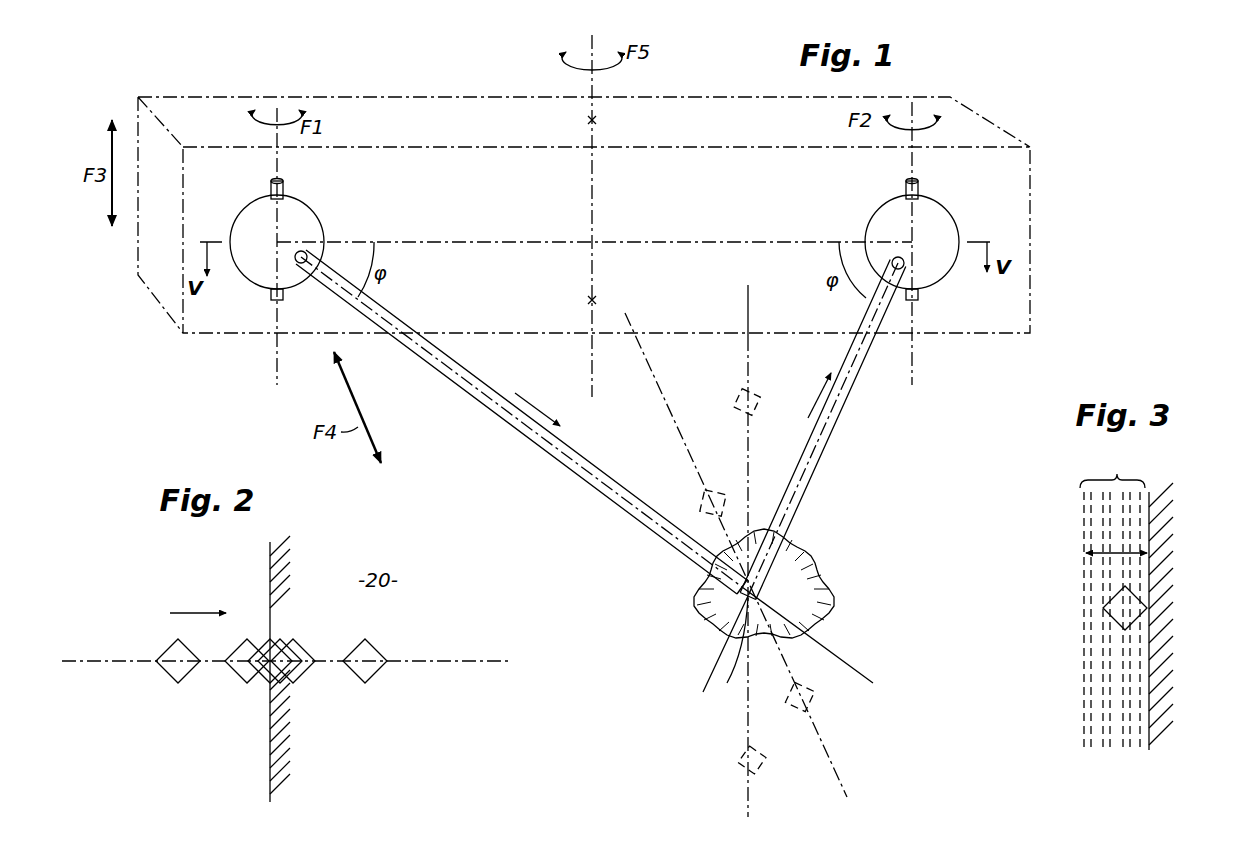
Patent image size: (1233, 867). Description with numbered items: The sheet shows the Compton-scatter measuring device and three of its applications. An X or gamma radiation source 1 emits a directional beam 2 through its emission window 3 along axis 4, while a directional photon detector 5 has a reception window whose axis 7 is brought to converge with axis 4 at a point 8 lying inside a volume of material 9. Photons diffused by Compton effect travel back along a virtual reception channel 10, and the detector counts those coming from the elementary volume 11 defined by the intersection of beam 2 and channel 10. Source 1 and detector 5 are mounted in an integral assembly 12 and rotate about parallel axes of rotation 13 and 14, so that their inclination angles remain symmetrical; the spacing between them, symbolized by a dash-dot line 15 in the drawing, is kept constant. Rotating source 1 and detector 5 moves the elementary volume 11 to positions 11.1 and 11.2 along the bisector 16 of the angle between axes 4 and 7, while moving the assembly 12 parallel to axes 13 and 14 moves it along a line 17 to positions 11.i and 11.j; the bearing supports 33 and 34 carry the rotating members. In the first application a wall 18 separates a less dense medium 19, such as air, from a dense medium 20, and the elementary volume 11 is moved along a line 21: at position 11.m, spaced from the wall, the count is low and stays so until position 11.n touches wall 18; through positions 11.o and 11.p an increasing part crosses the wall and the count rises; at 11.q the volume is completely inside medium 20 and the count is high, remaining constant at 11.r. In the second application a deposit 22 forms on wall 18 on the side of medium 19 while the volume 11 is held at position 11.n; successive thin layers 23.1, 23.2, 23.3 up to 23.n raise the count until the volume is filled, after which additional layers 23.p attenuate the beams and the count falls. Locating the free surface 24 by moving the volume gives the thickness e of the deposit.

In FIG. 1, the X or gamma radiation source 1 is at (322, 211).
In FIG. 1, the directional beam 2 is at (478, 373).
In FIG. 1, the emission window 3 is at (296, 262).
In FIG. 1, the axis of the source 4 is at (572, 468).
In FIG. 1, the directional photon detector 5 is at (870, 209).
In FIG. 1, the axis of the detector 7 is at (867, 352).
In FIG. 1, the convergence point 8 is at (730, 653).
In FIG. 1, the volume of material 9 is at (814, 573).
In FIG. 1, the virtual reception channel 10 is at (834, 430).
In FIG. 1, the elementary volume 11 is at (700, 613).
In FIG. 1, the position of the elementary volume 11.1 is at (812, 708).
In FIG. 1, the position of the elementary volume 11.2 is at (700, 503).
In FIG. 1, the position of the elementary volume 11.i is at (740, 775).
In FIG. 1, the position of the elementary volume 11.j is at (757, 398).
In FIG. 2, the position of the elementary volume 11.m is at (186, 686).
In FIG. 2, the position of the elementary volume 11.n is at (243, 680).
In FIG. 3, the position of the elementary volume 11.n is at (1110, 618).
In FIG. 2, the position of the elementary volume 11.o is at (261, 633).
In FIG. 2, the position of the elementary volume 11.p is at (284, 640).
In FIG. 2, the position of the elementary volume 11.q is at (299, 680).
In FIG. 2, the position of the elementary volume 11.r is at (371, 667).
In FIG. 1, the integral assembly 12 is at (410, 97).
In FIG. 1, the axis of rotation 13 is at (279, 158).
In FIG. 1, the axis of rotation 14 is at (918, 165).
In FIG. 1, the horizontal center line 15 is at (656, 243).
In FIG. 1, the bisector 16 is at (843, 786).
In FIG. 1, the line 17 is at (755, 798).
In FIG. 2, the wall 18 is at (268, 576).
In FIG. 3, the wall 18 is at (1155, 521).
In FIG. 2, the medium 19 is at (118, 580).
In FIG. 3, the medium 19 is at (1008, 553).
In FIG. 2, the medium 20 is at (377, 580).
In FIG. 3, the medium 20 is at (1207, 553).
In FIG. 2, the line 21 is at (462, 665).
In FIG. 3, the deposit 22 is at (1112, 598).
In FIG. 3, the thin layer 23.1 is at (1150, 752).
In FIG. 3, the thin layer 23.2 is at (1128, 742).
In FIG. 3, the thin layer 23.3 is at (1118, 742).
In FIG. 3, the thin layer 23.n is at (1097, 742).
In FIG. 3, the additional deposition layer 23.p is at (1083, 705).
In FIG. 3, the free surface 24 is at (1080, 516).
In FIG. 1, the first shaft axis 33 is at (252, 226).
In FIG. 1, the second shaft axis 34 is at (940, 226).
In FIG. 3, the thickness e is at (1110, 560).